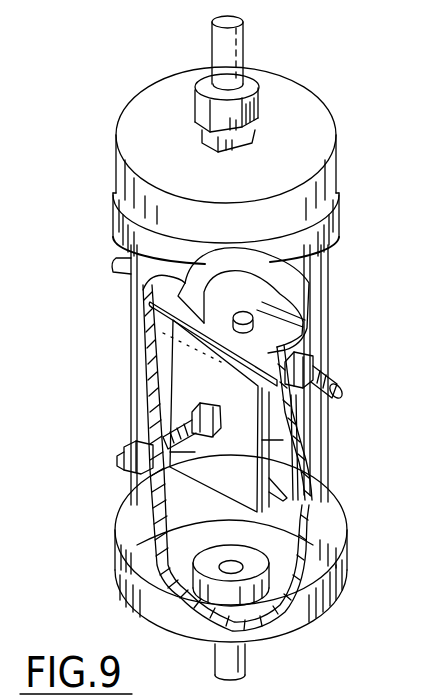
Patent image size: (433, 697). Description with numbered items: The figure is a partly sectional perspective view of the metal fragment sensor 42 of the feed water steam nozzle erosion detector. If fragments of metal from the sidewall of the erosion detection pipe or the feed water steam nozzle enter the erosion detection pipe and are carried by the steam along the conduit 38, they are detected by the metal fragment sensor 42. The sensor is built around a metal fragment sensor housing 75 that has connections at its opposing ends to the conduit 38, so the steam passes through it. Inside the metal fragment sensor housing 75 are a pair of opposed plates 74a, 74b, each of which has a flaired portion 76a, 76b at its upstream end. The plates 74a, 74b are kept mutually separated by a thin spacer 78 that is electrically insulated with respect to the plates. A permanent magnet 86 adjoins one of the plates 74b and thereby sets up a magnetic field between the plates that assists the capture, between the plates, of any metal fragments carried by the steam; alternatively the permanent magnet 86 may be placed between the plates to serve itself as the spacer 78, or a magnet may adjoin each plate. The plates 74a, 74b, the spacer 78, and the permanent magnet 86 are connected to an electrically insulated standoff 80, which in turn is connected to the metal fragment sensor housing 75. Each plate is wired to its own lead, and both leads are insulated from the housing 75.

The conduit 38 is at (244, 46).
The metal fragment sensor 42 is at (336, 108).
The metal fragment sensor housing 75 is at (326, 296).
The flaired portion 76a is at (167, 323).
The flaired portion 76b is at (248, 290).
The plate 74a is at (182, 372).
The plate 74b is at (318, 418).
The electrically insulated standoff 80 is at (156, 418).
The permanent magnet 86 is at (293, 448).
The spacer 78 is at (268, 459).